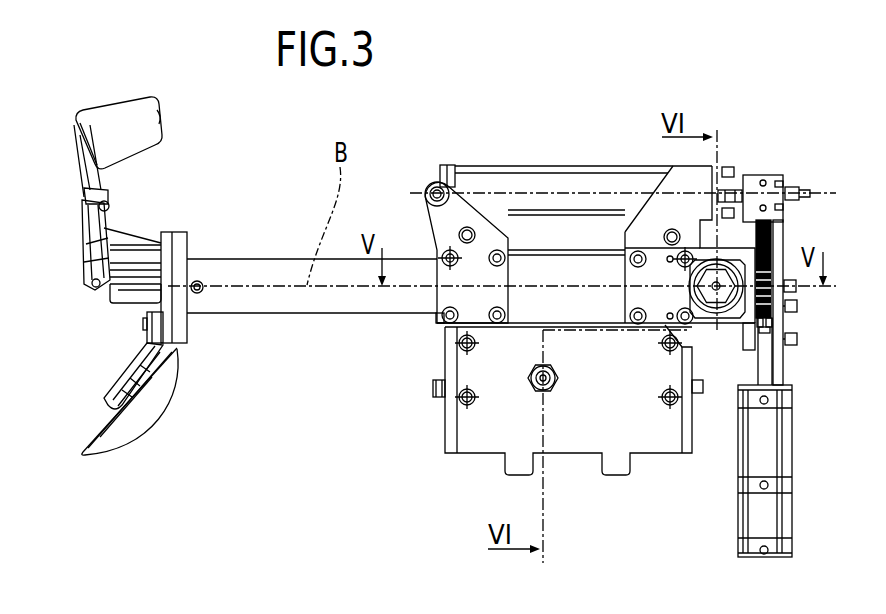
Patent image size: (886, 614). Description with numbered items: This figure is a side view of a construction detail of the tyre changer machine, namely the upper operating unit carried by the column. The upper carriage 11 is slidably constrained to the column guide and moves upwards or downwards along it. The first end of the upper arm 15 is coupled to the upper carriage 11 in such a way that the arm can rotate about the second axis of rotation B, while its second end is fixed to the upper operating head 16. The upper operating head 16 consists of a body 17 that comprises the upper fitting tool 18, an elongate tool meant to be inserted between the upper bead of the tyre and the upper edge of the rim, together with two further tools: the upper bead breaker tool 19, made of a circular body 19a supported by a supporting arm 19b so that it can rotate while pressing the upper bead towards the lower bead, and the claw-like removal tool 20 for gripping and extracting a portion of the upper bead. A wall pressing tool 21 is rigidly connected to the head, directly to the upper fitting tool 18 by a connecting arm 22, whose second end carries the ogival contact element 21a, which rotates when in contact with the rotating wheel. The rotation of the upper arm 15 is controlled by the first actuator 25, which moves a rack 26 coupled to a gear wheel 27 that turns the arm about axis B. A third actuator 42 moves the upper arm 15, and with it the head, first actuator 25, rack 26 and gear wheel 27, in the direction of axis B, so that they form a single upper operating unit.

The upper carriage 11 is at (482, 425).
The upper arm 15 is at (258, 268).
The upper operating head 16 is at (100, 344).
The body 17 is at (181, 247).
The upper fitting tool 18 is at (88, 264).
The upper bead breaker tool 19 is at (137, 434).
The circular body 19a is at (157, 387).
The supporting arm 19b is at (118, 374).
The removal tool 20 is at (120, 297).
The wall pressing tool 21 is at (154, 91).
The contact element 21a is at (120, 123).
The connecting arm 22 is at (75, 160).
The first actuator 25 is at (770, 518).
The rack 26 is at (772, 232).
The gear wheel 27 is at (780, 302).
The third actuator 42 is at (527, 188).